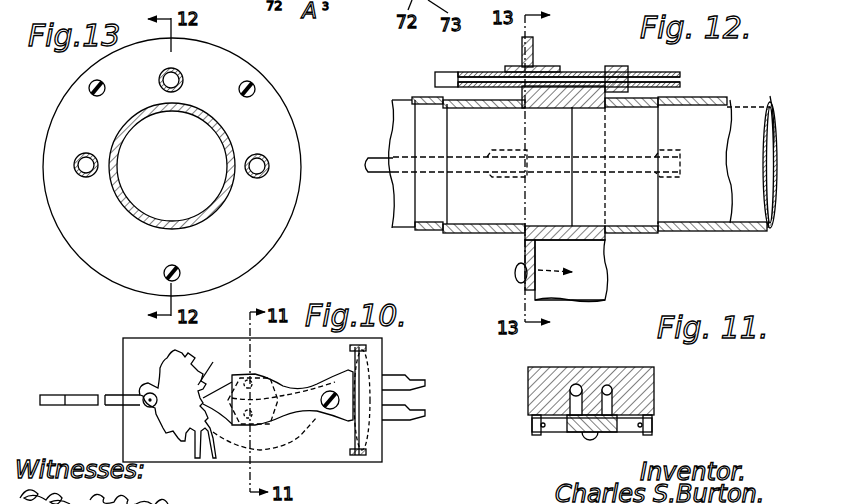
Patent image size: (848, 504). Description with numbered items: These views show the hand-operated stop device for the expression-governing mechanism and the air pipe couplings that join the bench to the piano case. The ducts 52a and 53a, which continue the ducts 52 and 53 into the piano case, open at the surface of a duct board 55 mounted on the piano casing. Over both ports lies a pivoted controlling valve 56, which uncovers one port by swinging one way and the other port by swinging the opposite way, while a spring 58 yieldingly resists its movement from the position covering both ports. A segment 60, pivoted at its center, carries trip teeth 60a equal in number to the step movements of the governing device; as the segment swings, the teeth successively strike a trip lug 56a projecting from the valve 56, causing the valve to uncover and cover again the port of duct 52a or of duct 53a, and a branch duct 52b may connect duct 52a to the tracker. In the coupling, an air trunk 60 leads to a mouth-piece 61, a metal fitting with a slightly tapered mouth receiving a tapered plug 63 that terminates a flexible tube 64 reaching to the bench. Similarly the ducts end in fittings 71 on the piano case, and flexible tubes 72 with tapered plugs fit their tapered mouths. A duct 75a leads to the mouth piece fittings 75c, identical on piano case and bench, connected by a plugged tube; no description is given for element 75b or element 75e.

In FIG. 12, the segment 60 is at (748, 233).
In FIG. 10, the segment 60 is at (165, 372).
In FIG. 10, the trip teeth 60a is at (183, 355).
In FIG. 13, the mouth-piece 61 is at (285, 128).
In FIG. 12, the mouth-piece 61 is at (527, 237).
In FIG. 13, the tapered plug 63 is at (207, 215).
In FIG. 12, the tapered plug 63 is at (495, 233).
In FIG. 12, the flexible tube 64 is at (430, 231).
In FIG. 13, the fitting 71 is at (82, 178).
In FIG. 12, the fitting 71 is at (520, 180).
In FIG. 12, the flexible tube 72 is at (377, 176).
In FIG. 12, the duct 75a is at (655, 60).
In FIG. 13, the tube 75b is at (182, 88).
In FIG. 12, the tube 75b is at (435, 78).
In FIG. 12, the mouth piece fitting 75c is at (550, 68).
In FIG. 12, the post 75e is at (521, 66).
In FIG. 10, the duct 52 is at (425, 383).
In FIG. 10, the duct 52a is at (247, 378).
In FIG. 11, the duct 52a is at (608, 388).
In FIG. 12, the branch duct 52b is at (677, 160).
In FIG. 10, the duct 53 is at (417, 415).
In FIG. 10, the duct 53a is at (259, 401).
In FIG. 11, the duct 53a is at (575, 386).
In FIG. 10, the duct board 55 is at (335, 463).
In FIG. 11, the duct board 55 is at (618, 376).
In FIG. 10, the controlling valve 56 is at (287, 388).
In FIG. 11, the controlling valve 56 is at (575, 433).
In FIG. 10, the trip lug 56a is at (168, 437).
In FIG. 10, the spring 58 is at (362, 363).
In FIG. 11, the spring 58 is at (635, 432).